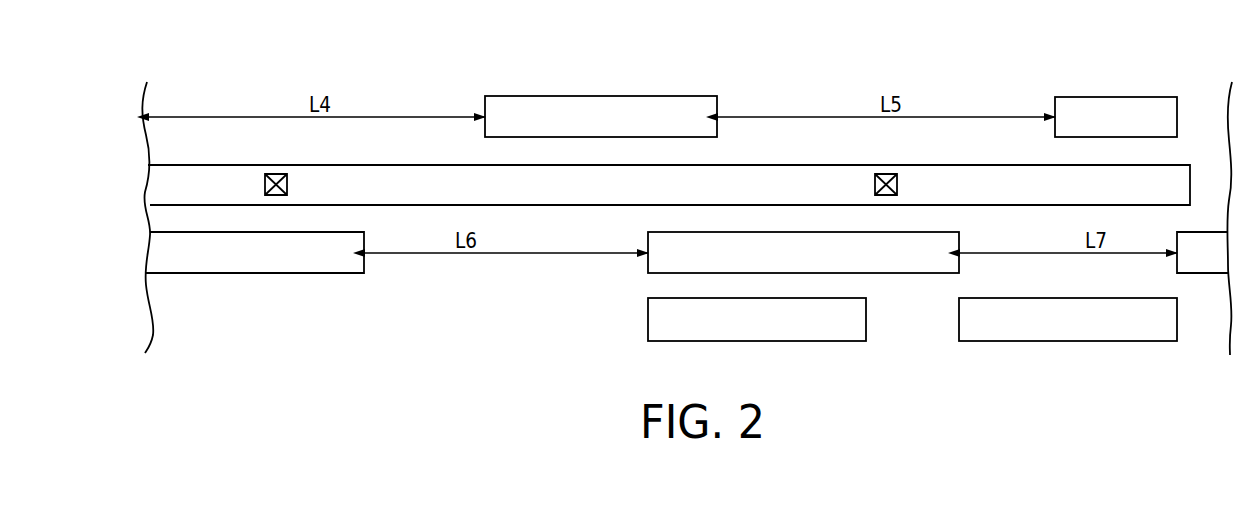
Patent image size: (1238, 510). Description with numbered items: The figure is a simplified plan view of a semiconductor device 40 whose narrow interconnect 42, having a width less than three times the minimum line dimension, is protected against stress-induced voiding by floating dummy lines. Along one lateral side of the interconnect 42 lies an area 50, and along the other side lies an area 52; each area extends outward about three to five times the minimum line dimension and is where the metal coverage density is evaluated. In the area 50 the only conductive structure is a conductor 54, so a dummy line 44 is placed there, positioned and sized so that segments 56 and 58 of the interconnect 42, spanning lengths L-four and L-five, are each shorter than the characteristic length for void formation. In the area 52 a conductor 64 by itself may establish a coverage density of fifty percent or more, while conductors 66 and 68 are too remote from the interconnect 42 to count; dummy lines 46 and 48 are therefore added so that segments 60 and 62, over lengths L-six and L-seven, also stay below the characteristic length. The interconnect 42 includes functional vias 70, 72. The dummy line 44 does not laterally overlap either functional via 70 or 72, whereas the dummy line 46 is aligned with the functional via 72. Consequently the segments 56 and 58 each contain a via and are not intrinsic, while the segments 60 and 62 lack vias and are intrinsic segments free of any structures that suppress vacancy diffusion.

The semiconductor device 40 is at (916, 64).
The interconnect 42 is at (1174, 164).
The dummy line 44 is at (618, 96).
The dummy line 46 is at (896, 274).
The dummy line 48 is at (1200, 274).
The area 50 is at (128, 151).
The area 52 is at (128, 326).
The conductor 54 is at (1121, 97).
The segment 56 is at (413, 173).
The segment 58 is at (822, 173).
The segment 60 is at (493, 195).
The segment 62 is at (1015, 195).
The conductor 64 is at (290, 274).
The conductor 66 is at (800, 342).
The conductor 68 is at (1105, 342).
The functional via 70 is at (276, 173).
The functional via 72 is at (886, 173).